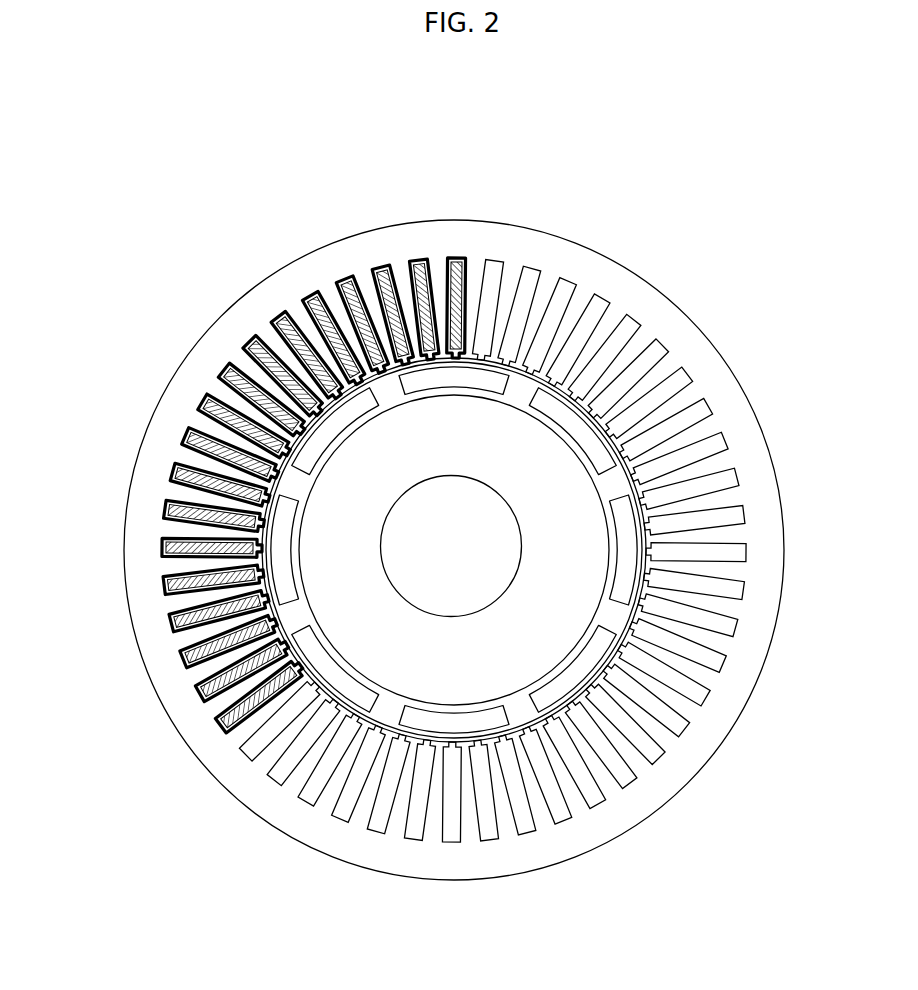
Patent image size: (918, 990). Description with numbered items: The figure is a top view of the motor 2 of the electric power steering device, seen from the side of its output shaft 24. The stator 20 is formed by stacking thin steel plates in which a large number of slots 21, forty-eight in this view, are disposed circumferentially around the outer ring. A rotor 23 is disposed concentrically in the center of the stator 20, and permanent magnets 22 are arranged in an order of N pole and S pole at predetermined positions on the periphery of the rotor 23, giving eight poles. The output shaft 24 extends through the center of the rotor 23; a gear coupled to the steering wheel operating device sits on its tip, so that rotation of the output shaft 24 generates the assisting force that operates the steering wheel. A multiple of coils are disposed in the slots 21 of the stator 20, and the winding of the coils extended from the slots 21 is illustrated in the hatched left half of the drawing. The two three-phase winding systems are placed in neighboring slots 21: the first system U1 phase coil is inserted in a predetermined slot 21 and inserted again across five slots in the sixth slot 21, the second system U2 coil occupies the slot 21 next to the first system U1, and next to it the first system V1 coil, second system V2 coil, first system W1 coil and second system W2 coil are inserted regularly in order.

The motor 2 is at (607, 223).
The stator 20 is at (652, 285).
The slot 21 is at (687, 372).
The permanent magnet 22 is at (604, 461).
The rotor 23 is at (558, 617).
The output shaft 24 is at (484, 608).
The first system U1 phase coil U1 is at (450, 253).
The second system U2 coil U2 is at (410, 260).
The first system V1 coil V1 is at (380, 267).
The second system V2 coil V2 is at (343, 278).
The first system W1 coil W1 is at (313, 293).
The second system W2 coil W2 is at (282, 310).